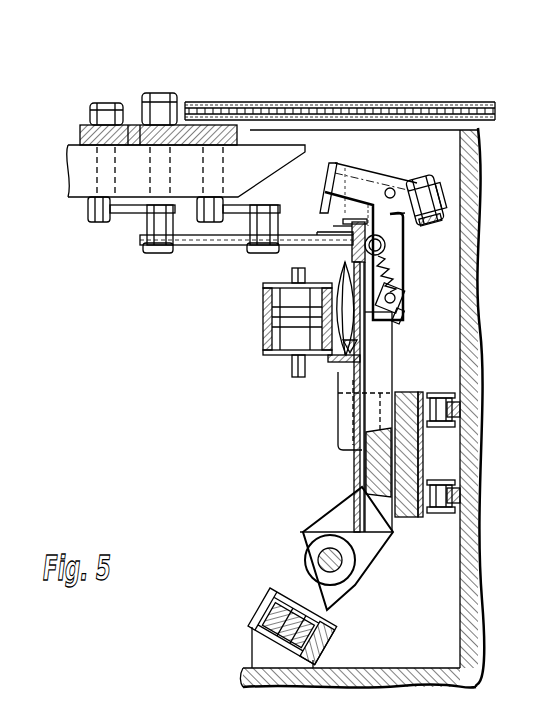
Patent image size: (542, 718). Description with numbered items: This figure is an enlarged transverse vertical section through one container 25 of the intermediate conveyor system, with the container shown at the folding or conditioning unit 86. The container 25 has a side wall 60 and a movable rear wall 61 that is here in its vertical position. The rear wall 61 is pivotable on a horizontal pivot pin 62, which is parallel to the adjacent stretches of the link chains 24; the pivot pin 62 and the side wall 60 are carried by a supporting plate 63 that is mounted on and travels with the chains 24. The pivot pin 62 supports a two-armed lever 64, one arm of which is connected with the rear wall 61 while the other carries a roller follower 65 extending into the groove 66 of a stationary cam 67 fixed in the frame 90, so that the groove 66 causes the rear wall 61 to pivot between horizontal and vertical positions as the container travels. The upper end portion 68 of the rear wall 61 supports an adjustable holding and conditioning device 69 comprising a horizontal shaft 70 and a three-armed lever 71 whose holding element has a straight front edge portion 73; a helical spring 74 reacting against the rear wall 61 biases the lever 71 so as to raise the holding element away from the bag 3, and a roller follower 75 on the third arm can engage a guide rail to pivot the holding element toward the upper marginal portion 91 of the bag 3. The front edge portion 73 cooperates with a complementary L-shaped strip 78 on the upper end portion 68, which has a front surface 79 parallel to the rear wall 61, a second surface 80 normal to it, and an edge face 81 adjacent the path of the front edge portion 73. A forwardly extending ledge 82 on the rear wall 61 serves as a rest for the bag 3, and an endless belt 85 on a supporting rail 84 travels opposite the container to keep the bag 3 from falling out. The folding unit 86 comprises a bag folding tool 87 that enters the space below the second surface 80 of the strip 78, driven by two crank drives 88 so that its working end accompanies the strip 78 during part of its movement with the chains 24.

The bag 3 is at (284, 322).
The link chains 24 is at (433, 457).
The container 25 is at (272, 420).
The side wall 60 is at (342, 420).
The rear wall 61 is at (396, 422).
The pivot pin 62 is at (349, 569).
The supporting plate 63 is at (422, 454).
The two-armed lever 64 is at (338, 548).
The roller follower 65 is at (279, 615).
The groove 66 is at (262, 636).
The stationary cam 67 is at (336, 642).
The upper end portion 68 is at (397, 243).
The holding and conditioning device 69 is at (340, 76).
The shaft 70 is at (422, 188).
The three-armed lever 71 is at (371, 233).
The front edge portion 73 is at (319, 268).
The helical spring 74 is at (406, 290).
The roller follower 75 is at (440, 236).
The strip 78 is at (385, 143).
The front surface 79 is at (378, 328).
The second surface 80 is at (350, 179).
The edge face 81 is at (322, 188).
The ledge 82 is at (335, 397).
The supporting rail 84 is at (297, 318).
The endless belt 85 is at (297, 327).
The folding or conditioning unit 86 is at (210, 199).
The bag folding tool 87 is at (339, 265).
The crank drives 88 is at (177, 231).
The frame 90 is at (376, 408).
The upper marginal portion 91 is at (316, 219).